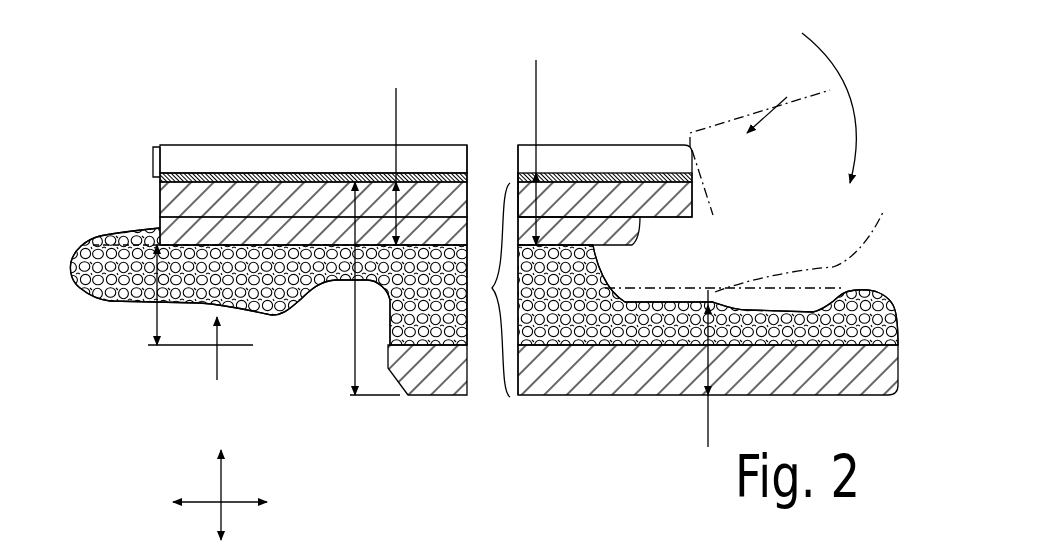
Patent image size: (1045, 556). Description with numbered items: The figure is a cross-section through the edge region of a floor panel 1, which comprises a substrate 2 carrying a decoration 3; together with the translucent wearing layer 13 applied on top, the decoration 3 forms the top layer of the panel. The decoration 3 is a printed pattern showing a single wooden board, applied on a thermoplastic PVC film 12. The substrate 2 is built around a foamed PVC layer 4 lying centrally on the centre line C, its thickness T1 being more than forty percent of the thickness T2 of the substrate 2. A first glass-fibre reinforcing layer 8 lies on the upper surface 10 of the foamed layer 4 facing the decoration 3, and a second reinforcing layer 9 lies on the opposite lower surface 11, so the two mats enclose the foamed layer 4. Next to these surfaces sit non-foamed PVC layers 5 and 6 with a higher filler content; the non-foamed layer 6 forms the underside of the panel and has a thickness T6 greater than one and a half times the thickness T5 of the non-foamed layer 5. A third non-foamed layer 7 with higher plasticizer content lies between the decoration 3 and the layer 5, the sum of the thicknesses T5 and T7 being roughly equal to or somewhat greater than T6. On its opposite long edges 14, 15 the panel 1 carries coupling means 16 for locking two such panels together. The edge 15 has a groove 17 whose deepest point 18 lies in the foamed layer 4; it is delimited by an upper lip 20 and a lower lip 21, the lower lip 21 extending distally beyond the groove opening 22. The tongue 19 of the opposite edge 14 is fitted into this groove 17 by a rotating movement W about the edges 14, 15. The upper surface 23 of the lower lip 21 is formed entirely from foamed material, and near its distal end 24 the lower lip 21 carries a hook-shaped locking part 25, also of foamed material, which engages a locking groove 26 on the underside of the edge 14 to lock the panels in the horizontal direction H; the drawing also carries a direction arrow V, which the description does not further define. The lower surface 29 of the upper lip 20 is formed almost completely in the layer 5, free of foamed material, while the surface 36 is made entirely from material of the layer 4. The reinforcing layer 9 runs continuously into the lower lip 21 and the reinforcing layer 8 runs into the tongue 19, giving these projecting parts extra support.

The floor panel 1 is at (565, 127).
The substrate 2 is at (494, 290).
The decoration 3 is at (340, 172).
The foamed layer 4 is at (553, 345).
The non-foamed layer 5 is at (160, 223).
The non-foamed layer 6 is at (435, 380).
The non-foamed layer 7 is at (223, 205).
The first reinforcing layer 8 is at (110, 233).
The second reinforcing layer 9 is at (633, 323).
The surface 10 is at (242, 240).
The surface 11 is at (688, 358).
The thermoplastic film 12 is at (467, 180).
The wearing layer 13 is at (153, 160).
The long edge 14 is at (165, 372).
The long edge 15 is at (752, 192).
The coupling means 16 is at (516, 241).
The groove 17 is at (588, 252).
The deepest point 18 is at (593, 258).
The tongue 19 is at (128, 300).
The upper lip 20 is at (647, 222).
The lower lip 21 is at (668, 350).
The groove opening 22 is at (726, 189).
The upper surface 23 is at (747, 310).
The distal end 24 is at (890, 313).
The hook-shaped locking part 25 is at (853, 307).
The locking groove 26 is at (323, 302).
The lower surface 29 is at (638, 235).
The surface 36 is at (787, 345).
The thickness T1 is at (155, 318).
The thickness T2 is at (355, 353).
The thickness T5 is at (397, 122).
The thickness T6 is at (708, 432).
The thickness T7 is at (537, 85).
The centre line C is at (696, 272).
The rotating movement W is at (832, 57).
The vertical direction V is at (226, 487).
The horizontal direction H is at (208, 503).